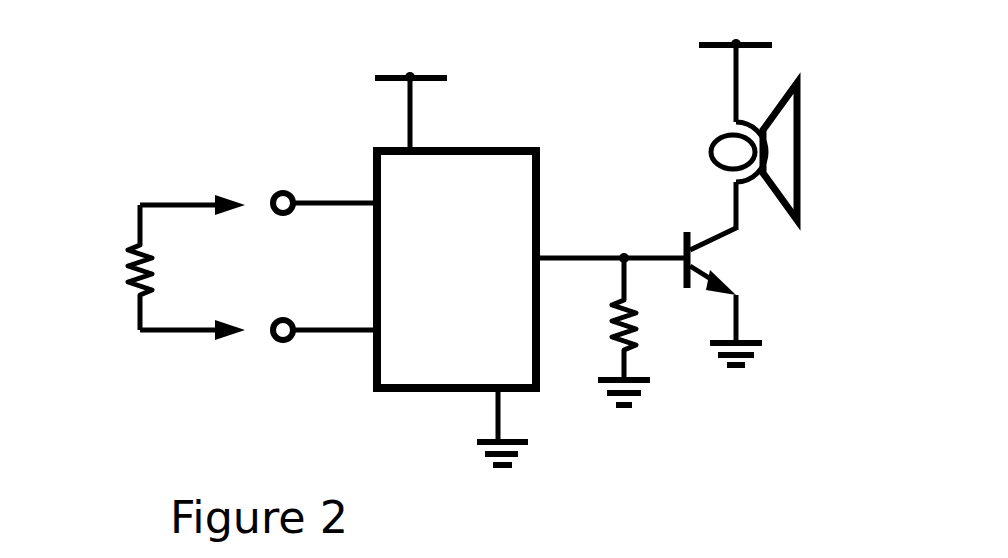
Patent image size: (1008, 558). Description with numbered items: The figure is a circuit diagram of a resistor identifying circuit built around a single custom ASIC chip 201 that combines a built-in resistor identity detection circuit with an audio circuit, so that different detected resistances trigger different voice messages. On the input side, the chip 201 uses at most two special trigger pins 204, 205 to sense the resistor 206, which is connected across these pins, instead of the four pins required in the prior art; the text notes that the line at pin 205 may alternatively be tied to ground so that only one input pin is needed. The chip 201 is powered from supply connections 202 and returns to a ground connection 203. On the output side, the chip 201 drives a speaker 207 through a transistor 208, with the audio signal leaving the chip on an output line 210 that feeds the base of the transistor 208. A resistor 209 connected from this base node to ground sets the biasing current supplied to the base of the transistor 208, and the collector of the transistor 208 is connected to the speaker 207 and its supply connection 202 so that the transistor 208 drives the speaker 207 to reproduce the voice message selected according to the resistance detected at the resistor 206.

The chip 201 is at (493, 185).
The power supply terminal 202 is at (402, 78).
The ground connection 203 is at (510, 432).
The trigger pin 204 is at (357, 205).
The trigger pin 205 is at (350, 333).
The resistor 206 is at (118, 268).
The speaker 207 is at (800, 118).
The transistor 208 is at (708, 256).
The resistor 209 is at (637, 333).
The output line 210 is at (578, 258).